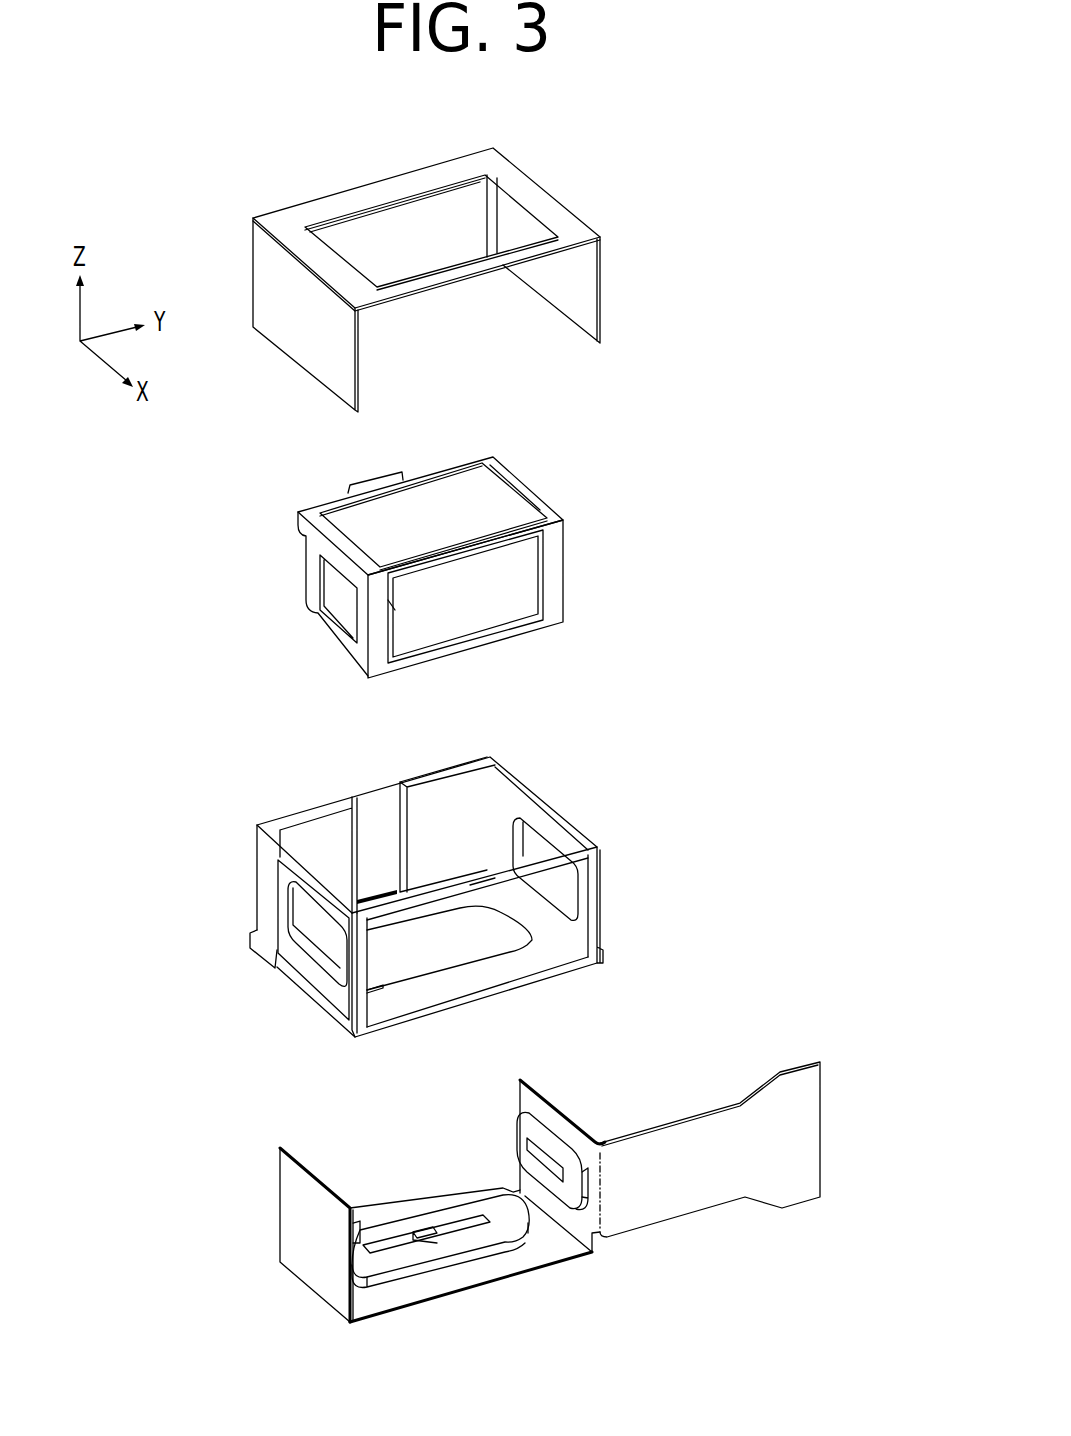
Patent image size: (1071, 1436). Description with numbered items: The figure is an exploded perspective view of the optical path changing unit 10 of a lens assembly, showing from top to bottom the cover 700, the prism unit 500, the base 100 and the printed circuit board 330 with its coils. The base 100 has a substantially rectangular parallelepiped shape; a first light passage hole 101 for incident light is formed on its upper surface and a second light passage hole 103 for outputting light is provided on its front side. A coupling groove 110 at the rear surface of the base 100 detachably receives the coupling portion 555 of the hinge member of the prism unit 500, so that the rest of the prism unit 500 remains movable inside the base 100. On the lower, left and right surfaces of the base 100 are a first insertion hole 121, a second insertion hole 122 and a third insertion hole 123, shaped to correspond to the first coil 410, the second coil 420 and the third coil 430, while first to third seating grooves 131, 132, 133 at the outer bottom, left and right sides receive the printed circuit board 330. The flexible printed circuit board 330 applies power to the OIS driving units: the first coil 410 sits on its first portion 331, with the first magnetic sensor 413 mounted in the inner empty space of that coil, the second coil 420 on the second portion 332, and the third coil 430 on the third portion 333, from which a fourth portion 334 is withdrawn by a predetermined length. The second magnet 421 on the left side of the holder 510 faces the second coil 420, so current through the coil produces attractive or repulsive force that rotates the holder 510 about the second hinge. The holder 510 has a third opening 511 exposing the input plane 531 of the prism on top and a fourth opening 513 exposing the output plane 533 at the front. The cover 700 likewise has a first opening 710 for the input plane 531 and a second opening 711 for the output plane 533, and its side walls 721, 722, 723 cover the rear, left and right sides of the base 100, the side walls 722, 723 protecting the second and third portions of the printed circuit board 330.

The optical path changing unit 10 is at (473, 97).
The base 100 is at (461, 889).
The first light passage hole 101 is at (300, 840).
The second light passage hole 103 is at (487, 887).
The coupling groove 110 is at (358, 847).
The first insertion hole 121 is at (450, 967).
The second insertion hole 122 is at (303, 910).
The third insertion hole 123 is at (567, 892).
The first seating groove 131 is at (288, 949).
The second seating groove 132 is at (343, 1002).
The third seating groove 133 is at (594, 890).
The printed circuit board 330 is at (511, 1218).
The first portion 331 is at (383, 1305).
The second portion 332 is at (285, 1200).
The third portion 333 is at (553, 1092).
The fourth portion 334 is at (690, 1133).
The first coil 410 is at (435, 1242).
The first magnetic sensor 413 is at (430, 1228).
The second coil 420 is at (365, 1222).
The second magnet 421 is at (337, 613).
The third coil 430 is at (557, 1193).
The prism unit 500 is at (450, 571).
The holder 510 is at (439, 571).
The third opening 511 is at (500, 495).
The fourth opening 513 is at (390, 603).
The input plane 531 is at (443, 502).
The output plane 533 is at (472, 610).
The coupling portion 555 is at (370, 487).
The cover 700 is at (463, 285).
The first opening 710 is at (381, 204).
The second opening 711 is at (424, 285).
The side wall 721 is at (335, 223).
The side wall 722 is at (280, 305).
The side wall 723 is at (590, 290).